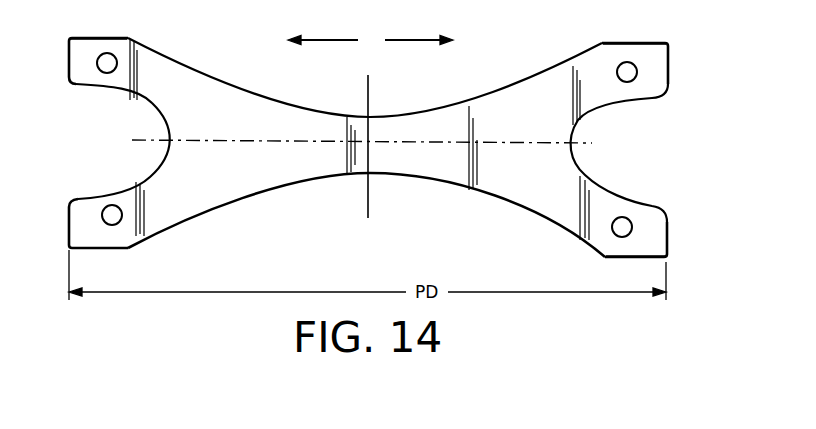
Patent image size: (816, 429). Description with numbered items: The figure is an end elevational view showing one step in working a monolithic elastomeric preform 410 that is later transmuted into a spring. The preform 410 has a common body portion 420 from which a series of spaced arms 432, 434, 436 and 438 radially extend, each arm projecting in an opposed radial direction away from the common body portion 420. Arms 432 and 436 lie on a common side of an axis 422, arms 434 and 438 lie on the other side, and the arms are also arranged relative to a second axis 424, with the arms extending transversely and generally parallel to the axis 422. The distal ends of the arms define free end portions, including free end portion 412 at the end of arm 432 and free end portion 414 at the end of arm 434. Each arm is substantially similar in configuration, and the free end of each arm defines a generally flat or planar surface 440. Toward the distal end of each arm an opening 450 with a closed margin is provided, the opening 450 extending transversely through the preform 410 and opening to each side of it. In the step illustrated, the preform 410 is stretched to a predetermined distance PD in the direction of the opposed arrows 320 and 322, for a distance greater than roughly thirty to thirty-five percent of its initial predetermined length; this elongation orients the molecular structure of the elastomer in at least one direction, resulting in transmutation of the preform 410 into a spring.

The arrow 320 is at (326, 40).
The arrow 322 is at (408, 40).
The preform 410 is at (533, 75).
The free end portion 412 is at (78, 53).
The free end portion 414 is at (657, 61).
The common body portion 420 is at (425, 173).
The axis 422 is at (372, 102).
The axis 424 is at (586, 145).
The arm 432 is at (143, 67).
The arm 434 is at (641, 90).
The arm 436 is at (167, 215).
The arm 438 is at (656, 237).
The planar surface 440 is at (102, 37).
The opening 450 is at (102, 66).